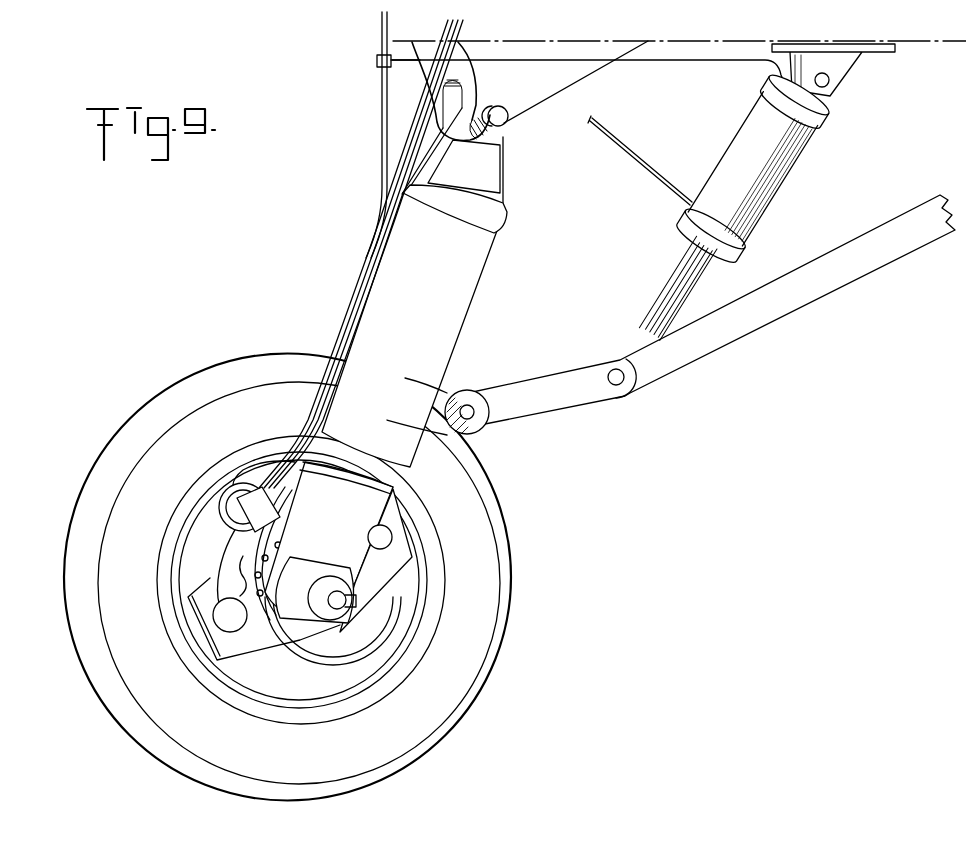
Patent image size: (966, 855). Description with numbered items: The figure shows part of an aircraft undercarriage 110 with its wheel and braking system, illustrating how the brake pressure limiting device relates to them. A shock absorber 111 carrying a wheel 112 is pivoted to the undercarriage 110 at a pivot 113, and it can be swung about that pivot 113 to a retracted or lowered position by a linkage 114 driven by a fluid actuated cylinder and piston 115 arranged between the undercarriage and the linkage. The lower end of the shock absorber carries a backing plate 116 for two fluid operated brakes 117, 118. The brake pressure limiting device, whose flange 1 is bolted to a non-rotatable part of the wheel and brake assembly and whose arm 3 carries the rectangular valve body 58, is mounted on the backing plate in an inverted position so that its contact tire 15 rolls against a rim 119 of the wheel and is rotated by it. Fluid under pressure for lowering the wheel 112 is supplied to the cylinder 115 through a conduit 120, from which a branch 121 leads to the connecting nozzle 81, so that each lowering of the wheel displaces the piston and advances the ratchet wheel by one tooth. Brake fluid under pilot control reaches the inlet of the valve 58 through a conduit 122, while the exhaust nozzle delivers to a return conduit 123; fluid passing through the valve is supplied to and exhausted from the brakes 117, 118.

The flange 1 is at (243, 565).
The arm 3 is at (250, 542).
The contact tire 15 is at (238, 480).
The valve body 58 is at (265, 520).
The connecting nozzle 81 is at (237, 495).
The undercarriage 110 is at (521, 216).
The shock absorber 111 is at (462, 272).
The wheel 112 is at (485, 543).
The pivot 113 is at (504, 123).
The linkage 114 is at (550, 405).
The fluid actuated cylinder and piston 115 is at (718, 177).
The backing plate 116 is at (393, 570).
The fluid operated brake 117 is at (230, 628).
The fluid operated brake 118 is at (386, 531).
The rim 119 is at (182, 512).
The conduit 120 is at (690, 60).
The branch 121 is at (378, 126).
The conduit 122 is at (417, 108).
The return conduit 123 is at (397, 224).